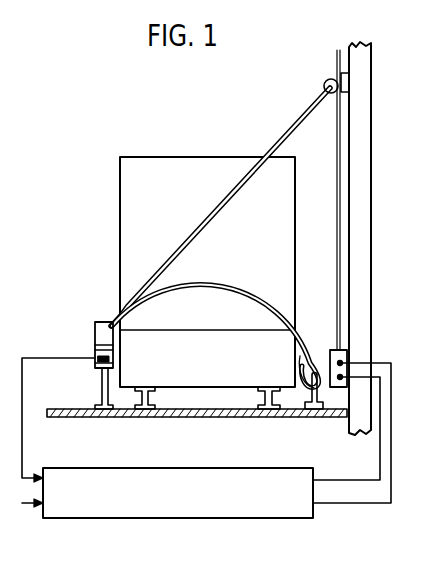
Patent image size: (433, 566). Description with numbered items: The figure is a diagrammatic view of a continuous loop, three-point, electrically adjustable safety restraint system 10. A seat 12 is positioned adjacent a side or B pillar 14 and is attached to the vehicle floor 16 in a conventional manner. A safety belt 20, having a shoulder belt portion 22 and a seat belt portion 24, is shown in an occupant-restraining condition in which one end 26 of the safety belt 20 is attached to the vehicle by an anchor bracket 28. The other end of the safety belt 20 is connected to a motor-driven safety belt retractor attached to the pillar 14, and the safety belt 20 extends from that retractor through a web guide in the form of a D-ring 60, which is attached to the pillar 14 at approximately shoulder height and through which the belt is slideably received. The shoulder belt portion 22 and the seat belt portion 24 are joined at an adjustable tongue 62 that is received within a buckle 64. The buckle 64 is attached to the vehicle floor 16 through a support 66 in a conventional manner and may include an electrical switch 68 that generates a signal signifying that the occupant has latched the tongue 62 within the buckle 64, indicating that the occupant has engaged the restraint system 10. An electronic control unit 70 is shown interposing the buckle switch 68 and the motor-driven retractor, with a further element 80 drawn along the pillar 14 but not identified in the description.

The safety restraint system 10 is at (137, 108).
The seat 12 is at (120, 224).
The B pillar 14 is at (364, 166).
The vehicle floor 16 is at (137, 419).
The safety belt 20 is at (220, 235).
The shoulder belt portion 22 is at (295, 117).
The seat belt portion 24 is at (228, 287).
The end of the safety belt 26 is at (284, 368).
The anchor bracket 28 is at (299, 418).
The D-ring 60 is at (327, 78).
The adjustable tongue 62 is at (95, 328).
The buckle 64 is at (98, 362).
The support 66 is at (100, 392).
The electrical switch 68 is at (95, 357).
The electronic control unit (ECU) 70 is at (265, 505).
The cable and sensor 80 is at (337, 58).